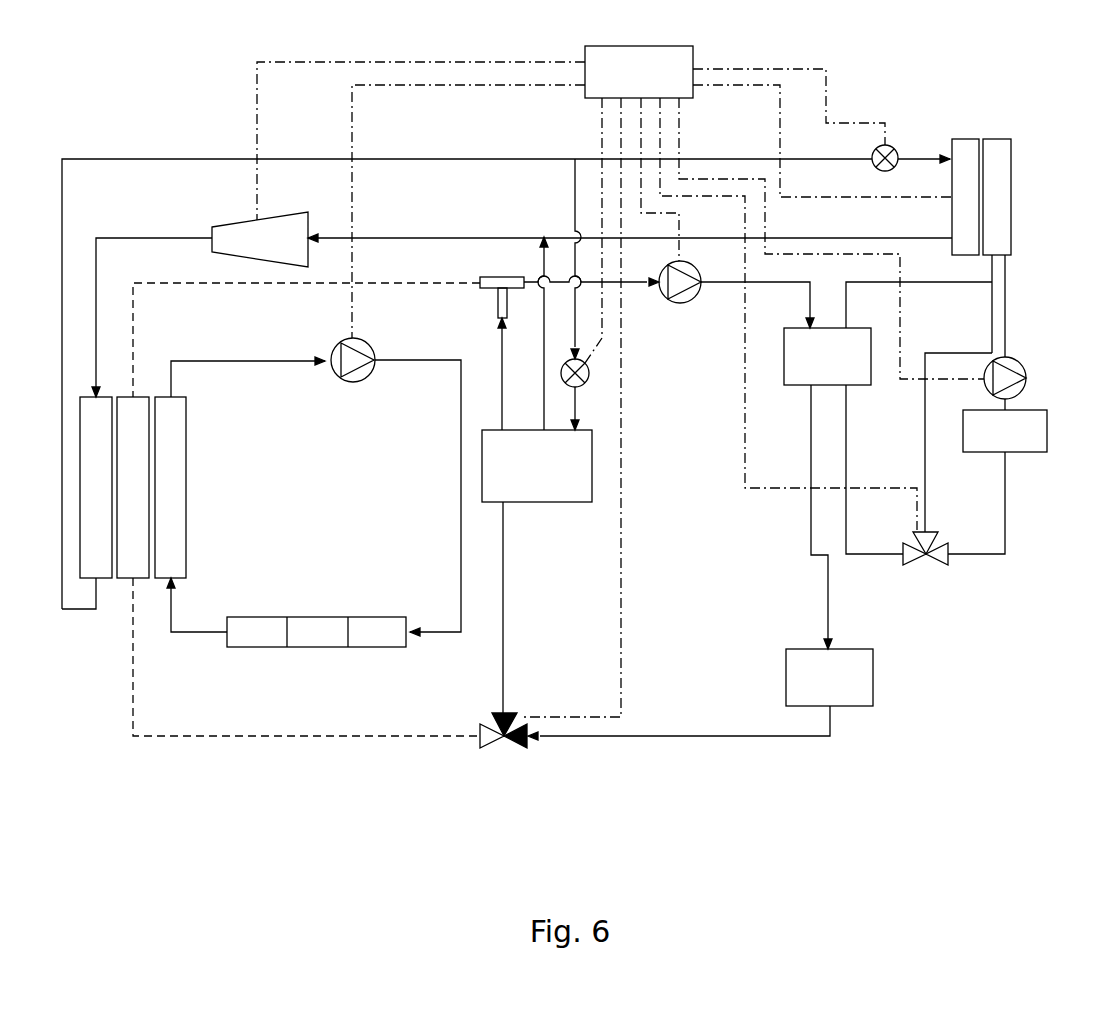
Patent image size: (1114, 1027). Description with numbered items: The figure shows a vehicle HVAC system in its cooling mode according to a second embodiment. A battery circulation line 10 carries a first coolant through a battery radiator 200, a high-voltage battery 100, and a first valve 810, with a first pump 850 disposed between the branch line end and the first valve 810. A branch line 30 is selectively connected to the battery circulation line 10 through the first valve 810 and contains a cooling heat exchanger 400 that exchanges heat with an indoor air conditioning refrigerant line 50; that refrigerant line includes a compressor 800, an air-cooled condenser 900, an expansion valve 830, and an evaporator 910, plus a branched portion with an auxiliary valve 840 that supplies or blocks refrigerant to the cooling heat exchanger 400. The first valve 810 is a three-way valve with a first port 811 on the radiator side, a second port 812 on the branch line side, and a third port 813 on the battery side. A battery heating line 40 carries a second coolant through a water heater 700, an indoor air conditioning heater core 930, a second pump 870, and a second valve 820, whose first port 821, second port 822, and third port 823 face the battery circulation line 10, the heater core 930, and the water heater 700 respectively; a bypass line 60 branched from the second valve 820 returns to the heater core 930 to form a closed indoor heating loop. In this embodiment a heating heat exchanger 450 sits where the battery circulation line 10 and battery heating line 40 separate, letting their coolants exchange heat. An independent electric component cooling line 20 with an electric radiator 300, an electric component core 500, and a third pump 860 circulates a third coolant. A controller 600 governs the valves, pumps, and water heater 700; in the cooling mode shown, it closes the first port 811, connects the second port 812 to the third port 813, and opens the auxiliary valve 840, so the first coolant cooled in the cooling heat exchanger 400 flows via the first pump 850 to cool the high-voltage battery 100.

The battery circulation line 10 is at (428, 283).
The electric component cooling line 20 is at (255, 362).
The branch line 30 is at (503, 605).
The battery heating line 40 is at (940, 283).
The indoor air conditioning refrigerant line 50 is at (478, 159).
The bypass line 60 is at (925, 435).
The high-voltage battery 100 is at (873, 678).
The battery radiator 200 is at (140, 397).
The electric radiator 300 is at (186, 493).
The cooling heat exchanger 400 is at (560, 502).
The heating heat exchanger 450 is at (797, 386).
The electric component core 500 is at (313, 617).
The controller 600 is at (693, 56).
The water heater 700 is at (1028, 452).
The compressor 800 is at (212, 228).
The first valve 810 is at (477, 744).
The first port 811 is at (480, 746).
The second port 812 is at (495, 713).
The third port 813 is at (497, 751).
The second valve 820 is at (949, 556).
The first port 821 is at (903, 566).
The second port 822 is at (933, 530).
The third port 823 is at (955, 571).
The expansion valve 830 is at (890, 145).
The auxiliary valve 840 is at (589, 378).
The first pump 850 is at (688, 303).
The third pump 860 is at (350, 382).
The second pump 870 is at (1020, 362).
The air-cooled condenser 900 is at (104, 578).
The evaporator 910 is at (966, 139).
The indoor air conditioning heater core 930 is at (1002, 139).